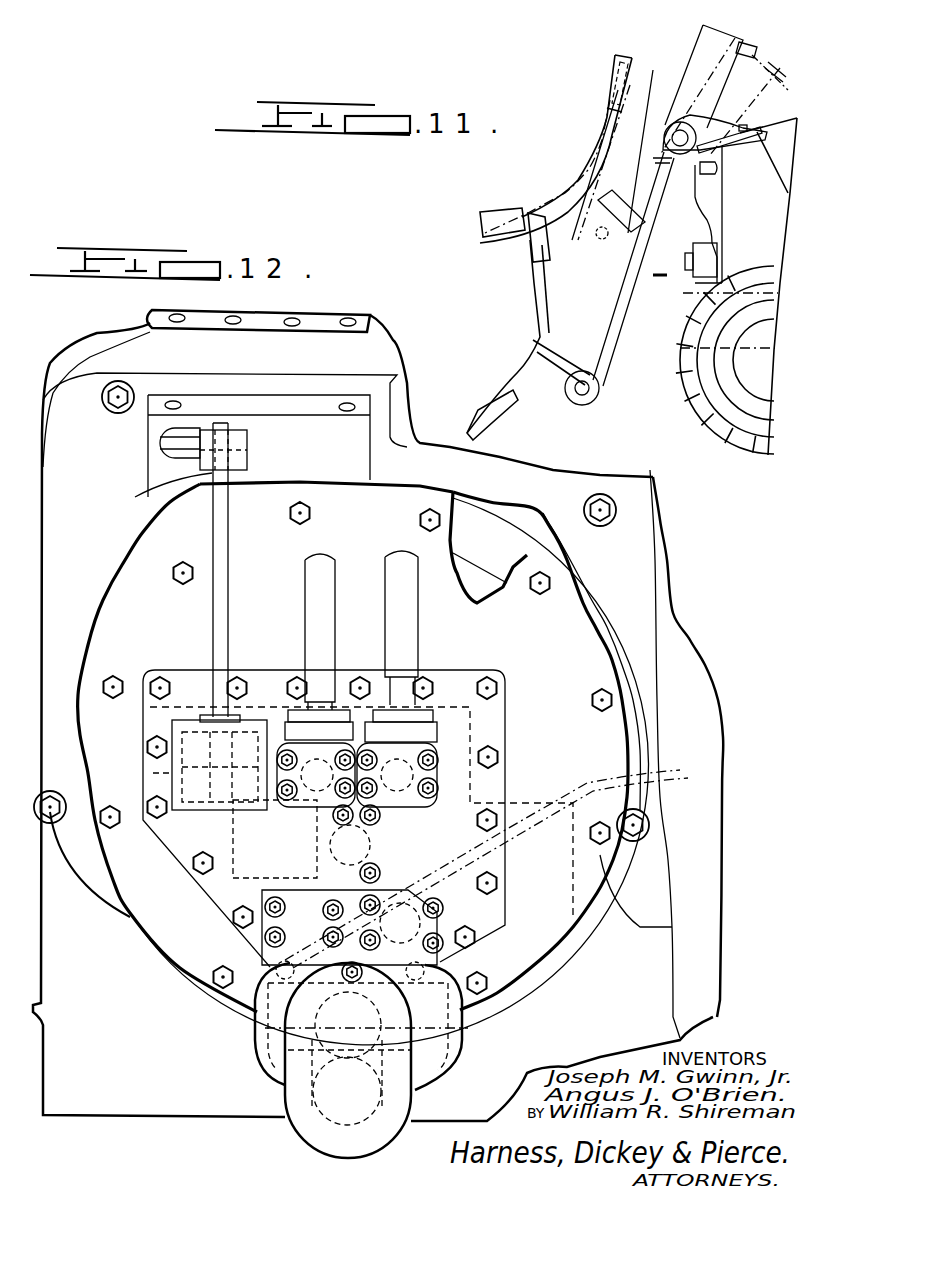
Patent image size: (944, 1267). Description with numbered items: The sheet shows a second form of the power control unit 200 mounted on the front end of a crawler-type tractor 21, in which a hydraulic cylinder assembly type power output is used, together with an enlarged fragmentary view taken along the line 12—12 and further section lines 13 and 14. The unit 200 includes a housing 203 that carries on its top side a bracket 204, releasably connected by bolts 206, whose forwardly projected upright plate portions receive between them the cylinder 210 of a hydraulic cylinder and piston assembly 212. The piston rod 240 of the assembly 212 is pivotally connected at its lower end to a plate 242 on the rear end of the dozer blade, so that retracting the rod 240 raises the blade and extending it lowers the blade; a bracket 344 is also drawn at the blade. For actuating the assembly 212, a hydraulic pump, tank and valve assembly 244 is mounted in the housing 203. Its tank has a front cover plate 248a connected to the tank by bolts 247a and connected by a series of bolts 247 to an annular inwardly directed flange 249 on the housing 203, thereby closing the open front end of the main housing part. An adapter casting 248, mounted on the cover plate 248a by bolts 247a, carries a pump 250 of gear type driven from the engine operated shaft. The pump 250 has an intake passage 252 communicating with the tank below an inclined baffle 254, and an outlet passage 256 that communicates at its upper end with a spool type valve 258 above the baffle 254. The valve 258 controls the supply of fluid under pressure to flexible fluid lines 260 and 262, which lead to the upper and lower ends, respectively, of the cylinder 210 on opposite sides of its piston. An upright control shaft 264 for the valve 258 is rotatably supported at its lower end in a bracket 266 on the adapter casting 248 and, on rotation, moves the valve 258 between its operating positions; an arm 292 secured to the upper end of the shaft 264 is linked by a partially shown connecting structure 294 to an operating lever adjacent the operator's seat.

In FIG. 11, the crawler-type tractor 21 is at (753, 453).
In FIG. 11, the housing 203 is at (772, 241).
In FIG. 11, the control unit 200 is at (723, 200).
In FIG. 11, the flexible fluid line 262 is at (722, 277).
In FIG. 12, the flexible fluid line 262 is at (407, 628).
In FIG. 11, the bracket 204 is at (717, 116).
In FIG. 11, the bolt 206 is at (748, 132).
In FIG. 11, the cylinder 210 is at (727, 40).
In FIG. 11, the flexible fluid line 260 is at (757, 52).
In FIG. 12, the flexible fluid line 260 is at (305, 628).
In FIG. 11, the hydraulic cylinder and piston assembly 212 is at (623, 253).
In FIG. 11, the piston rod 240 is at (607, 340).
In FIG. 11, the plate 242 is at (587, 403).
In FIG. 11, the bracket 344 is at (520, 366).
In FIG. 11, the section line 12— 12 is at (700, 164).
In FIG. 11, the section line 13 is at (668, 79).
In FIG. 11, the section line 14 is at (642, 137).
In FIG. 12, the hydraulic pump, tank and valve assembly 244 is at (127, 1120).
In FIG. 12, the annular inwardly directed flange 249 is at (490, 527).
In FIG. 12, the front cover plate 248a is at (552, 664).
In FIG. 12, the bolt 247 is at (600, 709).
In FIG. 12, the bolt 247a is at (496, 762).
In FIG. 12, the adapter casting 248 is at (483, 858).
In FIG. 12, the inclined baffle 254 is at (507, 865).
In FIG. 12, the connecting structure 294 is at (158, 437).
In FIG. 12, the arm 292 is at (247, 448).
In FIG. 12, the control shaft 264 is at (257, 599).
In FIG. 12, the bracket 266 is at (172, 785).
In FIG. 12, the outlet passage 256 is at (280, 850).
In FIG. 12, the spool type valve 258 is at (405, 820).
In FIG. 12, the intake passage 252 is at (452, 1032).
In FIG. 12, the pump 250 is at (315, 1130).